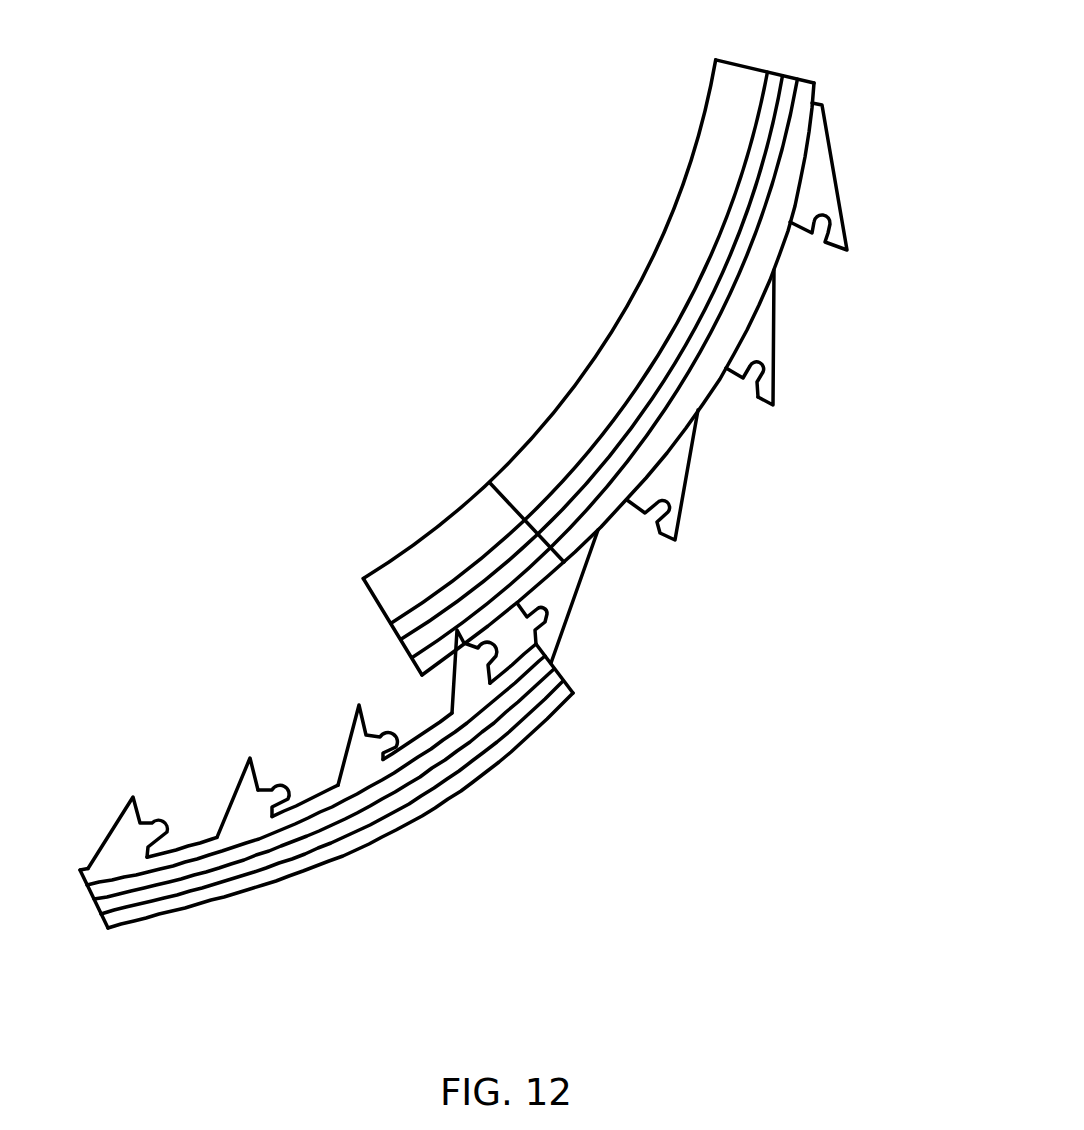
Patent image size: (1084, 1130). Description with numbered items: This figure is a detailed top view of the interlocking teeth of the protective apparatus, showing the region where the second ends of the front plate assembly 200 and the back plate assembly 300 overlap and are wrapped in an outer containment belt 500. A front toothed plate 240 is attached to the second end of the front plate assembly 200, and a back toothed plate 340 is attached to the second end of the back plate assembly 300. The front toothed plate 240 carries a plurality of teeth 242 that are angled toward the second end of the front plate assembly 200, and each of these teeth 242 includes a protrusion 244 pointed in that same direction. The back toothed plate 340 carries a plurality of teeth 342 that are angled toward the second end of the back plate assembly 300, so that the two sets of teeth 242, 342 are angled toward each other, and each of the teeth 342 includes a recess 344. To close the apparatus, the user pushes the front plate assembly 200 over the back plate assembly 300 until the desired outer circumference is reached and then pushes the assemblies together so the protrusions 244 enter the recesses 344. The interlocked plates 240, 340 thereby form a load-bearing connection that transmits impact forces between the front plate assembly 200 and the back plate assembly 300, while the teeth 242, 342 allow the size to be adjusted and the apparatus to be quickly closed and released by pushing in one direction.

The front plate assembly 200 is at (315, 802).
The front toothed plate 240 is at (99, 827).
The teeth 242 is at (230, 768).
The protrusion 244 is at (276, 788).
The back plate assembly 300 is at (673, 344).
The back toothed plate 340 is at (848, 161).
The teeth 342 is at (794, 373).
The recess 344 is at (747, 398).
The sleeve / wide face of second ring segment 500 is at (572, 417).